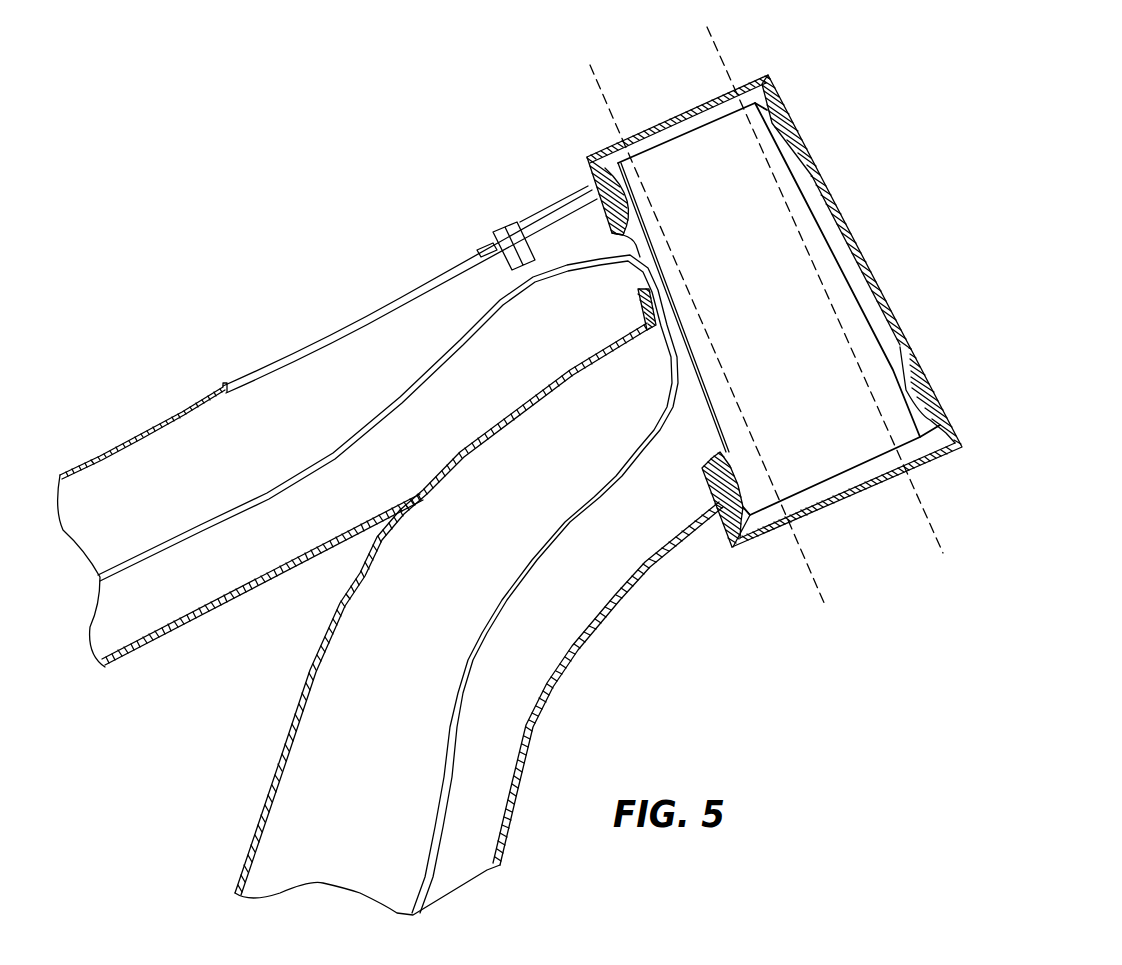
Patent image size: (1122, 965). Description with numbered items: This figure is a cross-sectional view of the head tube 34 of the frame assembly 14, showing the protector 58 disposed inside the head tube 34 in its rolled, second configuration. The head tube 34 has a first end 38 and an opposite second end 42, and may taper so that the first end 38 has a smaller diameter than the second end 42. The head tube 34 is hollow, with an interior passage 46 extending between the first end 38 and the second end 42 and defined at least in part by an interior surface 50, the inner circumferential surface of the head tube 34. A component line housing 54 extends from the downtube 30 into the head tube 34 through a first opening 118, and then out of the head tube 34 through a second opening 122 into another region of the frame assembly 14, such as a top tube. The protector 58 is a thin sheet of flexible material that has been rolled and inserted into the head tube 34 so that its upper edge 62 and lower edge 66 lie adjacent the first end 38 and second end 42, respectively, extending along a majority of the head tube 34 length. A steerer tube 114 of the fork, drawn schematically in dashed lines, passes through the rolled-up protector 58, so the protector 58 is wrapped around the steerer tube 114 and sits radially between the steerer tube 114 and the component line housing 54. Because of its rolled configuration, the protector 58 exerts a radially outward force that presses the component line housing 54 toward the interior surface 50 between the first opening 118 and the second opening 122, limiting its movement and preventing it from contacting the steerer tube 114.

The frame assembly 14 is at (262, 330).
The downtube 30 is at (262, 815).
The head tube 34 is at (796, 117).
The first end 38 is at (770, 78).
The second end 42 is at (952, 425).
The interior passage 46 is at (748, 530).
The interior surface 50 is at (705, 448).
The component line housing 54 is at (487, 300).
The protector 58 is at (716, 113).
The upper edge 62 is at (672, 135).
The lower edge 66 is at (843, 477).
The steerer tube 114 is at (603, 124).
The first opening 118 is at (707, 447).
The second opening 122 is at (640, 290).